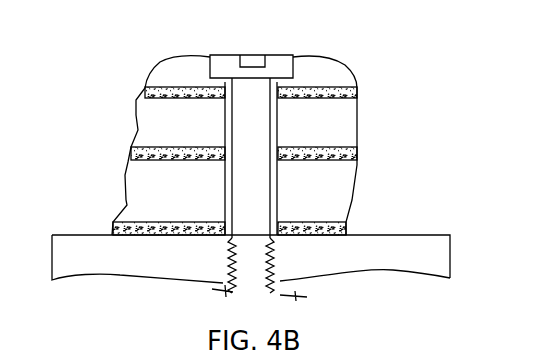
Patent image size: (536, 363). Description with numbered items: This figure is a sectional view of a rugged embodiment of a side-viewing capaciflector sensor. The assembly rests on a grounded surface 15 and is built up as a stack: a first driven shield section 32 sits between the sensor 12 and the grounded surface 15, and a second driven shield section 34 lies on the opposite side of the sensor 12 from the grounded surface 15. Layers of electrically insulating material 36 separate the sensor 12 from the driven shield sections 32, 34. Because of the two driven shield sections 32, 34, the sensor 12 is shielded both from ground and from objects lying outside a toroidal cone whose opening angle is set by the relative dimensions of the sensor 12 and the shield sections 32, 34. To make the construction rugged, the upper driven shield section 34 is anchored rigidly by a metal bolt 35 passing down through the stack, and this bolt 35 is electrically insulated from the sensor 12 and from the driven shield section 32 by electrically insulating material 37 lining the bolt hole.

The sensor 12 is at (355, 133).
The grounded surface 15 is at (365, 242).
The driven shield section 32 is at (128, 202).
The driven shield section 34 is at (328, 72).
The metal bolt 35 is at (282, 53).
The electrically insulating material 36 is at (357, 93).
The electrically insulating material 37 is at (279, 206).